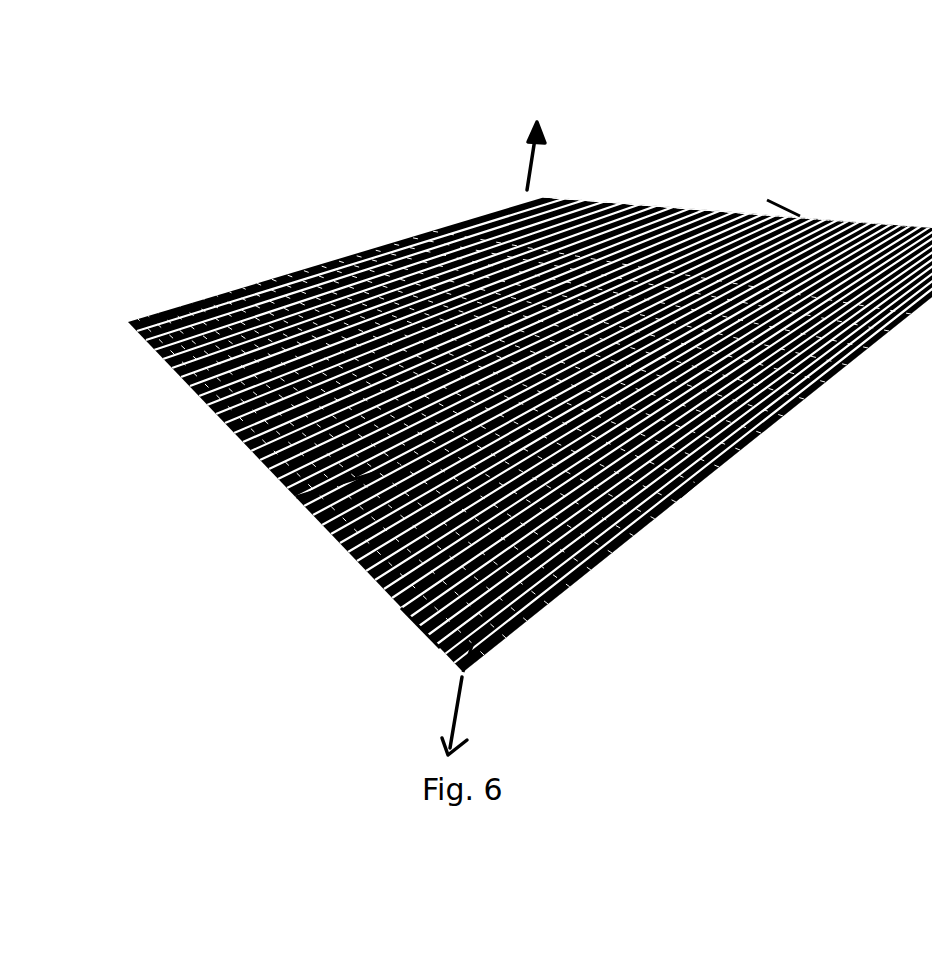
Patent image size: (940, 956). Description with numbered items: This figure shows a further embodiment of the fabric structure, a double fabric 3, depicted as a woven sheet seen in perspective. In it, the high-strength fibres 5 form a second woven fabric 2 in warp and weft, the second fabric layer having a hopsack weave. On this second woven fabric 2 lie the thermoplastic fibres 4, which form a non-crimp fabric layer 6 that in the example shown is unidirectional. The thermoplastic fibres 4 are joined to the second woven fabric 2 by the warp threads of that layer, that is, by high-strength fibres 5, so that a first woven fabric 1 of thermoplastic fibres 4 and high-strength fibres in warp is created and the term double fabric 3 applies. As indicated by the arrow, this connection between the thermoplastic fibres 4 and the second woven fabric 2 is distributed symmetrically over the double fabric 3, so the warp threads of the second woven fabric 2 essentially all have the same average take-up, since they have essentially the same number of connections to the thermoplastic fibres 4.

The first woven fabric 1 is at (298, 497).
The second woven fabric 2 is at (680, 497).
The double fabric 3 is at (688, 100).
The thermoplastic fibres 4 is at (400, 591).
The high-strength fibres 5 is at (478, 624).
The non-crimp fabric layer 6 is at (767, 200).